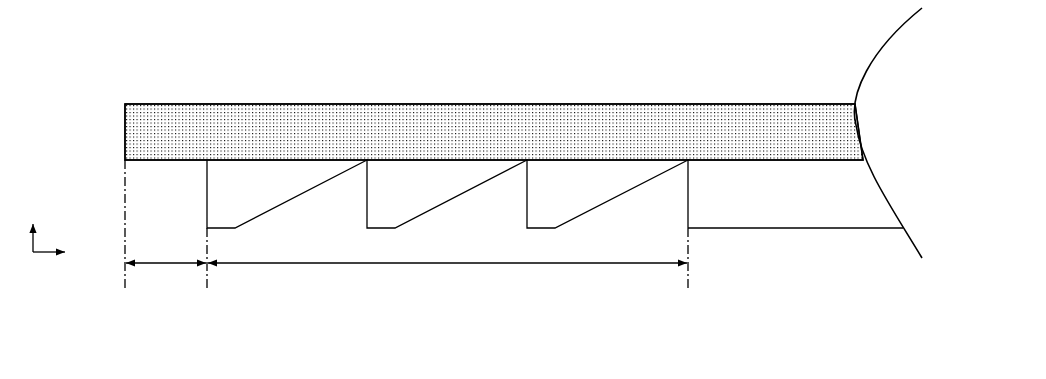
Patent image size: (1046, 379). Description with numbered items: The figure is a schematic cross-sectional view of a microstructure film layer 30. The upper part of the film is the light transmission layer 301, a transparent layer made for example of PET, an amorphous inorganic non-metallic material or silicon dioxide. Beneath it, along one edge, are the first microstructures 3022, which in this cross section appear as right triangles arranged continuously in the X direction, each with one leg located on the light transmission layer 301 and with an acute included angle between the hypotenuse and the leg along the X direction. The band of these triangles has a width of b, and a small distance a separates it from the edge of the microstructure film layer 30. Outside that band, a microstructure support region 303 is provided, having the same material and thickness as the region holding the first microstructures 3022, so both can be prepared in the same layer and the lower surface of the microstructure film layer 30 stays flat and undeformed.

The microstructure film layer 30 is at (85, 58).
The light transmission layer 301 is at (287, 120).
The first microstructures 3022 is at (233, 202).
The microstructure support region 303 is at (782, 217).